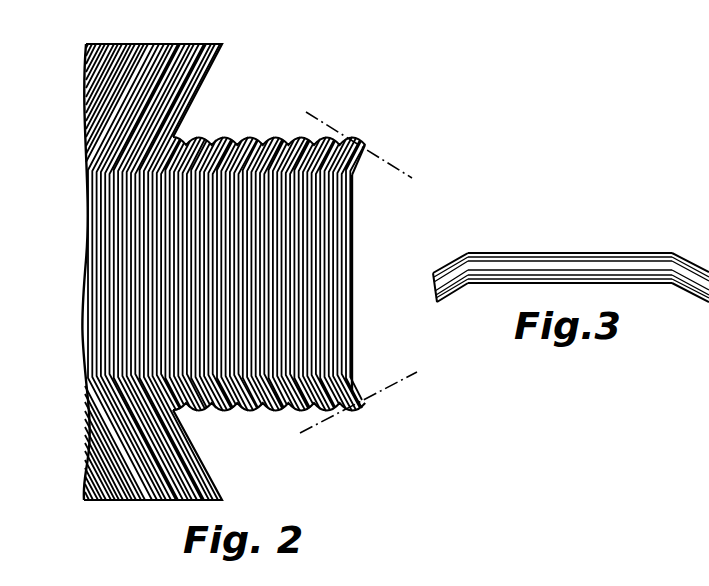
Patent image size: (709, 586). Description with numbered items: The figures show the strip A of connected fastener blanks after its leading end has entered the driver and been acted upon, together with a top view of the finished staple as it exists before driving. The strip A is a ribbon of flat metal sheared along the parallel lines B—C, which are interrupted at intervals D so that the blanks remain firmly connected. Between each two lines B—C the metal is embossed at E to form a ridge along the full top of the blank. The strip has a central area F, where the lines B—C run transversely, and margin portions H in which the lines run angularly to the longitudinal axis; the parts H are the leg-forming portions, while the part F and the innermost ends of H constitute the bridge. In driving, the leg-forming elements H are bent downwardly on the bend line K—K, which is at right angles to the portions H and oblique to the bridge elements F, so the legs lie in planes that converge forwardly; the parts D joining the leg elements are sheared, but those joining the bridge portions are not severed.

In FIG. 2, the strip A is at (361, 286).
In FIG. 2, the shear line B is at (204, 47).
In FIG. 2, the shear line C is at (198, 503).
In FIG. 2, the interruption D is at (150, 83).
In FIG. 2, the embossed ridge E is at (237, 134).
In FIG. 2, the central area F is at (323, 243).
In FIG. 3, the central area F is at (574, 253).
In FIG. 2, the margin portion H is at (183, 70).
In FIG. 3, the margin portion H is at (457, 258).
In FIG. 2, the bend line K is at (353, 277).